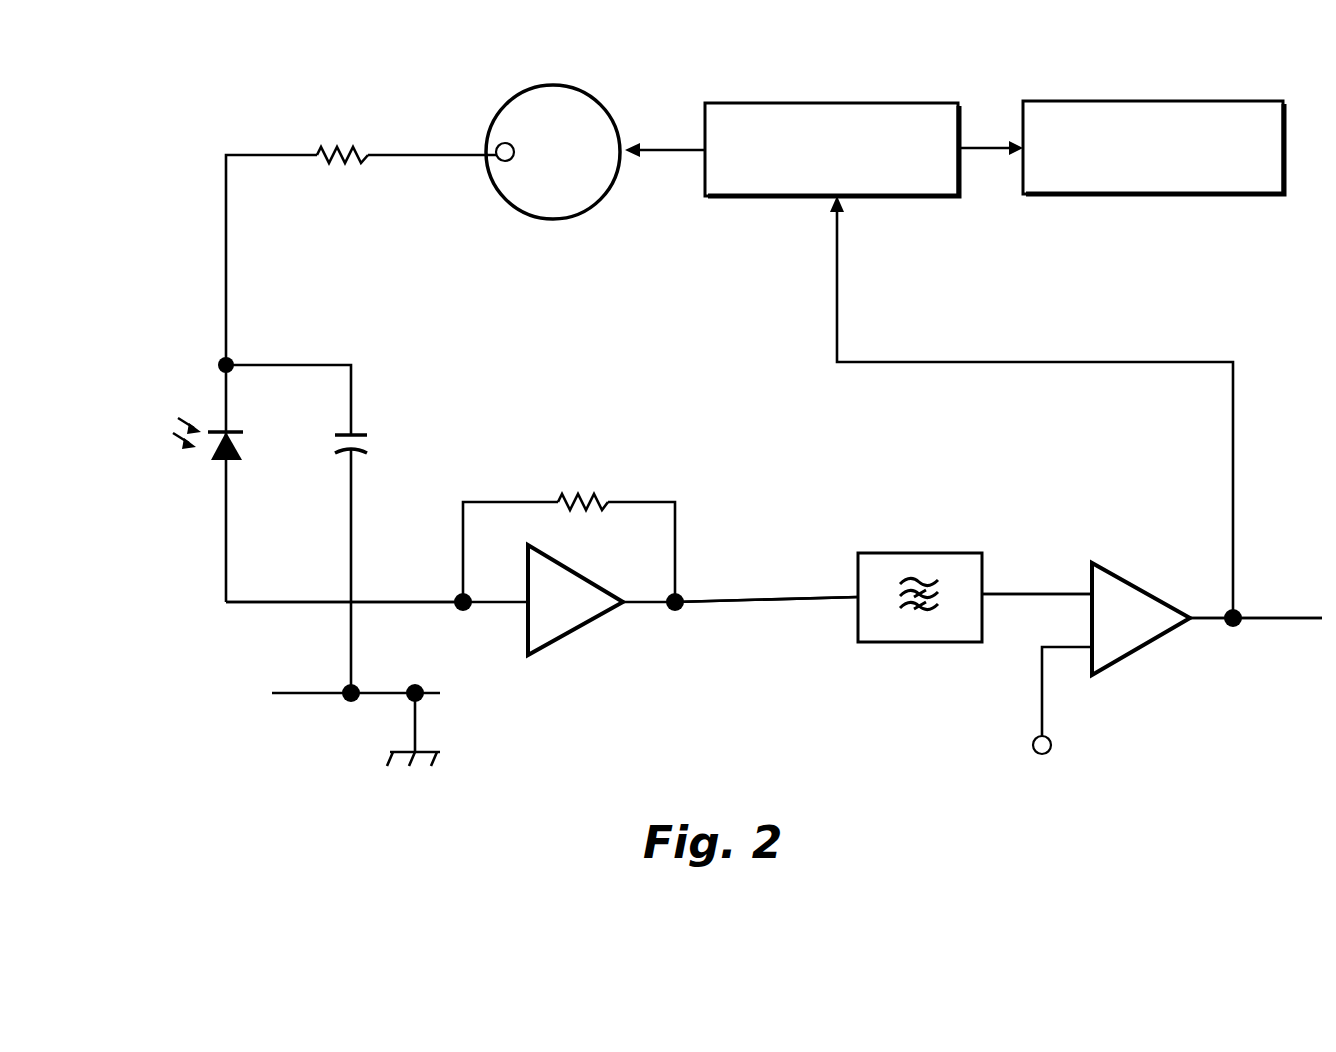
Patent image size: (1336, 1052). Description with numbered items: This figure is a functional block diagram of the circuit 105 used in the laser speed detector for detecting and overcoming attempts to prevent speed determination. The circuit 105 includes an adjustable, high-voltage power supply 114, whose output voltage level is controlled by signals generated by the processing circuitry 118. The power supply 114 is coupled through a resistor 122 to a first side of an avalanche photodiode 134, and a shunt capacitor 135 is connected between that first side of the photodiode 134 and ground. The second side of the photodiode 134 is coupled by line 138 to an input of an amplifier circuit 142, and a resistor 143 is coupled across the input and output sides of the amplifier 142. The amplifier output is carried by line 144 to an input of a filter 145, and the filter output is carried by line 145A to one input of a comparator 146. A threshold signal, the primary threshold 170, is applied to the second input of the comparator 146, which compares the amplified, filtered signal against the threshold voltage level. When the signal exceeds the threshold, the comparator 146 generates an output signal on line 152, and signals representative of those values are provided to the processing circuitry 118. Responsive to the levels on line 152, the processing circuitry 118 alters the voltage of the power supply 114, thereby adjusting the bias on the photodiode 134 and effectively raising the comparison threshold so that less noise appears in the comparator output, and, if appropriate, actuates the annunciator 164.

The circuit 105 is at (146, 195).
The high-voltage power supply 114 is at (553, 85).
The processing circuitry 118 is at (836, 103).
The resistor 122 is at (338, 150).
The avalanche photodiode 134 is at (222, 462).
The shunt capacitor 135 is at (355, 435).
The line 138 is at (320, 603).
The amplifier circuit 142 is at (590, 619).
The resistor 143 is at (600, 497).
The line 144 is at (700, 603).
The filter 145 is at (937, 553).
The line 145A is at (1037, 592).
The comparator 146 is at (1158, 592).
The line 152 is at (1283, 622).
The annunciator 164 is at (1103, 101).
The primary threshold 170 is at (1040, 703).